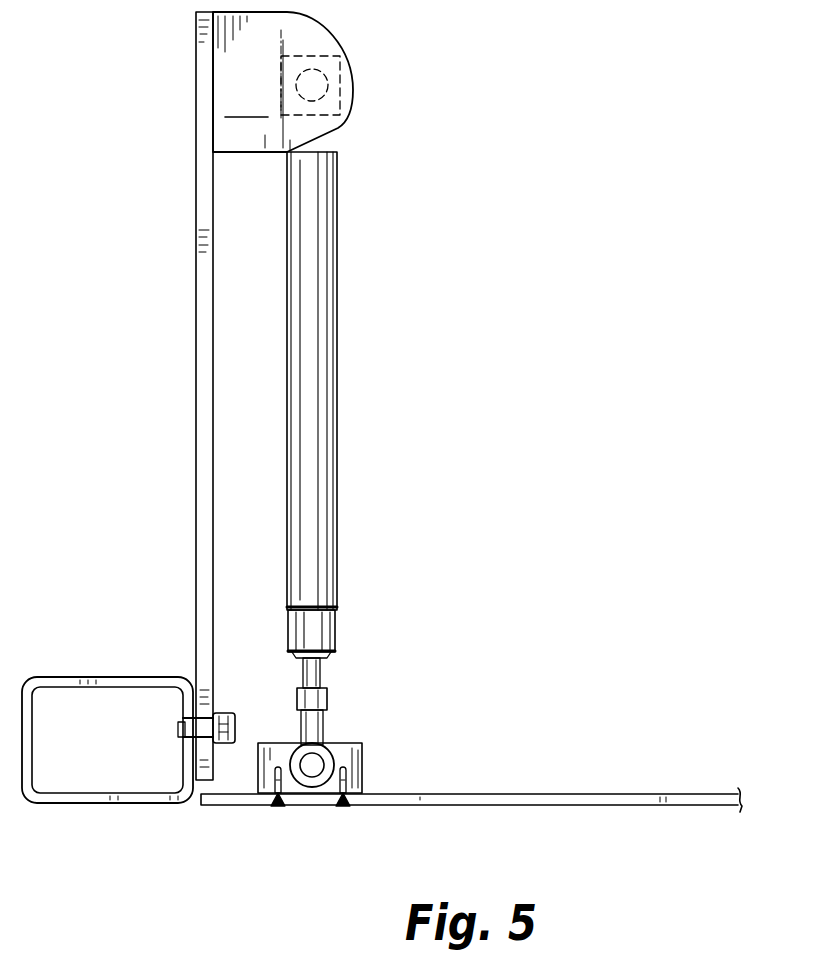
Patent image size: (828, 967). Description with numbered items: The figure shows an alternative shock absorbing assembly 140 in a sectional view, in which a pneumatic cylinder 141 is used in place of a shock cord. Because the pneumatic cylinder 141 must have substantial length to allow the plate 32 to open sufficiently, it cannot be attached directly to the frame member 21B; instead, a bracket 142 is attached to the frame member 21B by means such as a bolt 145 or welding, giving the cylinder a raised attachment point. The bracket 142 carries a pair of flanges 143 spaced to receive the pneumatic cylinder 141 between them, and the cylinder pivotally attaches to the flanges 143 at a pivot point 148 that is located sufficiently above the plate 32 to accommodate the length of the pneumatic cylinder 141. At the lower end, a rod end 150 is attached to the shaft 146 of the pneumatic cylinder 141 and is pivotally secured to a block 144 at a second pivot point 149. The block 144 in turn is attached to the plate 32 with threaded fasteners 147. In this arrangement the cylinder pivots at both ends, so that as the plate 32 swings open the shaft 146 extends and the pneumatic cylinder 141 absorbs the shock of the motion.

The shock absorbing assembly 140 is at (422, 583).
The pneumatic cylinder 141 is at (337, 340).
The bracket 142 is at (196, 318).
The flanges 143 is at (283, 82).
The block 144 is at (362, 760).
The bolt 145 is at (222, 713).
The shaft 146 is at (320, 672).
The threaded fasteners 147 is at (276, 806).
The pivot point 148 is at (353, 98).
The pivot point 149 is at (315, 765).
The rod end 150 is at (327, 698).
The frame member 21B is at (92, 677).
The plate 32 is at (641, 806).